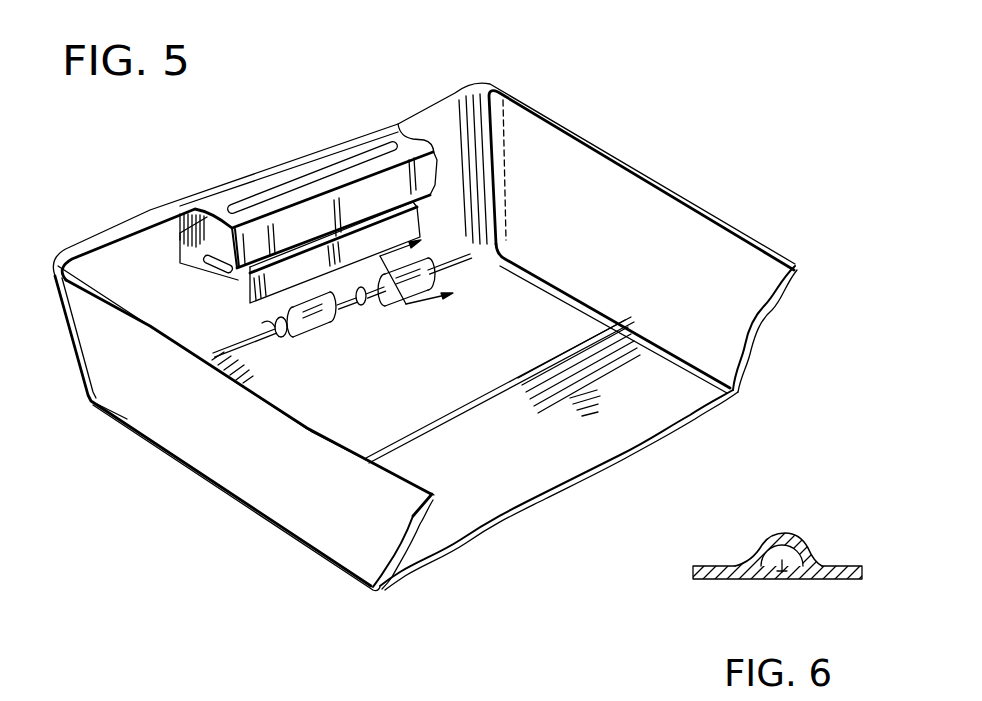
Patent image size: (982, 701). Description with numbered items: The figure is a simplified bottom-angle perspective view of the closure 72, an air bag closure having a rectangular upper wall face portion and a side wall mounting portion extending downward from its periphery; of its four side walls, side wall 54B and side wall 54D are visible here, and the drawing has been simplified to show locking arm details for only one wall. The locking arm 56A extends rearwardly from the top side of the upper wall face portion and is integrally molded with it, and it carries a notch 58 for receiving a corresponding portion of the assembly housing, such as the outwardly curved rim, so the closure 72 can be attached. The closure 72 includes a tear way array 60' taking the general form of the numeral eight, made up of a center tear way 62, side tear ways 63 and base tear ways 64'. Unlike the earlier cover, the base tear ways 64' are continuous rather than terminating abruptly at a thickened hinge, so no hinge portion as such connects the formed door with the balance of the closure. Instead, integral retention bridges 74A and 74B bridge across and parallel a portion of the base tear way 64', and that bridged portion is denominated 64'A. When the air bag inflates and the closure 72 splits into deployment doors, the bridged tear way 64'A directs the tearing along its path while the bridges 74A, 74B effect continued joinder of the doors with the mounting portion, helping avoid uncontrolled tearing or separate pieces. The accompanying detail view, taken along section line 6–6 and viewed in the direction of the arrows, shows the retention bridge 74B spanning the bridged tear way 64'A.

In FIG. 5, the closure 72 is at (733, 197).
In FIG. 5, the side wall 54B is at (523, 130).
In FIG. 5, the side wall 54D is at (223, 470).
In FIG. 5, the locking arm 56A is at (280, 170).
In FIG. 5, the notch 58 is at (212, 262).
In FIG. 5, the side tear way 63 is at (540, 267).
In FIG. 5, the center tear way 62 is at (427, 432).
In FIG. 5, the tear way array 60' is at (586, 369).
In FIG. 5, the base tear way 64' is at (294, 318).
In FIG. 5, the bridged portion of base tear way 64'A is at (336, 327).
In FIG. 6, the bridged portion of base tear way 64'A is at (826, 600).
In FIG. 5, the retention bridge 74A is at (288, 333).
In FIG. 5, the retention bridge 74B is at (432, 270).
In FIG. 6, the retention bridge 74B is at (790, 540).
In FIG. 5, the section line 6 is at (409, 282).